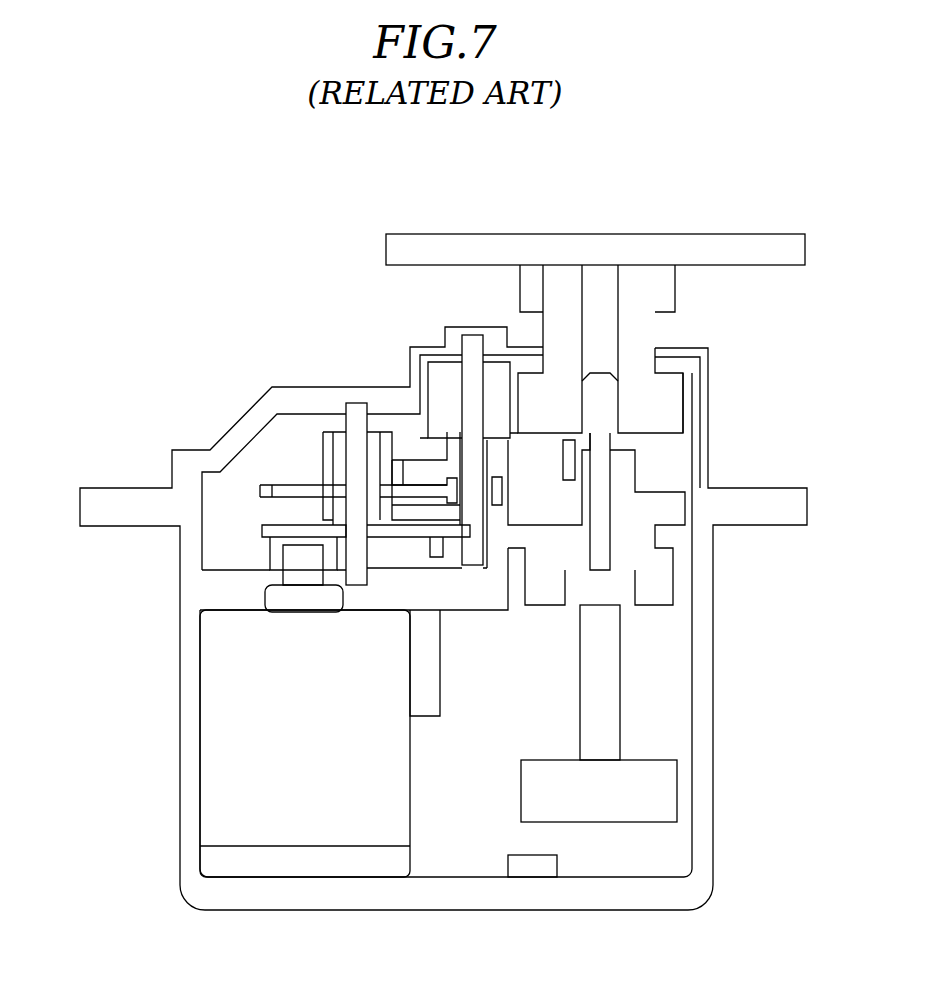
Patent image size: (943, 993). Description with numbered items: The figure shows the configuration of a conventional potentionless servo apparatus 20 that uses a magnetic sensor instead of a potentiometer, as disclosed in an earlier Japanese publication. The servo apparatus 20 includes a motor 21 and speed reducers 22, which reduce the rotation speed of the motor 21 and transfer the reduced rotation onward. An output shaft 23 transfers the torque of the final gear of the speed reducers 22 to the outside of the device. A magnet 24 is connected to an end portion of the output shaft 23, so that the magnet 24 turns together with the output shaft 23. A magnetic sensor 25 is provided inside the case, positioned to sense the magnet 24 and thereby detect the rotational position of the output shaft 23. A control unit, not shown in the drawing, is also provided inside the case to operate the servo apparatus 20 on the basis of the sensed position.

The servo apparatus 20 is at (708, 215).
The motor 21 is at (200, 711).
The speed reducers 22 is at (447, 478).
The output shaft 23 is at (655, 327).
The magnet 24 is at (677, 790).
The magnetic sensor 25 is at (530, 878).